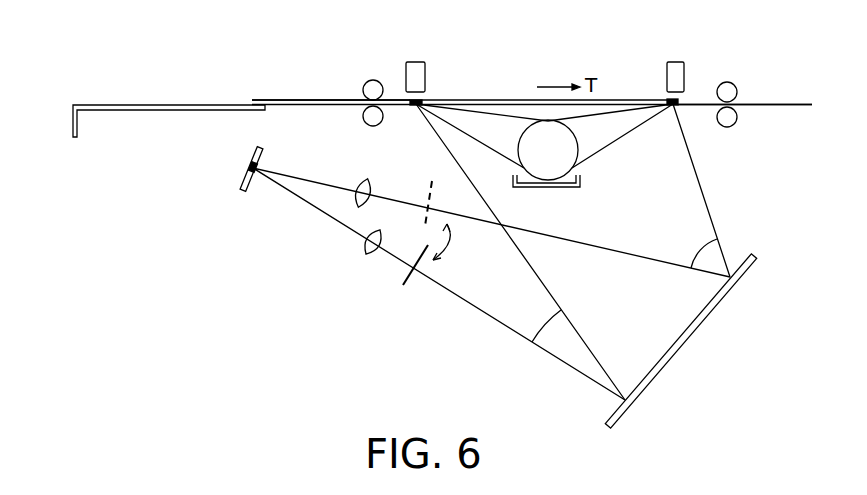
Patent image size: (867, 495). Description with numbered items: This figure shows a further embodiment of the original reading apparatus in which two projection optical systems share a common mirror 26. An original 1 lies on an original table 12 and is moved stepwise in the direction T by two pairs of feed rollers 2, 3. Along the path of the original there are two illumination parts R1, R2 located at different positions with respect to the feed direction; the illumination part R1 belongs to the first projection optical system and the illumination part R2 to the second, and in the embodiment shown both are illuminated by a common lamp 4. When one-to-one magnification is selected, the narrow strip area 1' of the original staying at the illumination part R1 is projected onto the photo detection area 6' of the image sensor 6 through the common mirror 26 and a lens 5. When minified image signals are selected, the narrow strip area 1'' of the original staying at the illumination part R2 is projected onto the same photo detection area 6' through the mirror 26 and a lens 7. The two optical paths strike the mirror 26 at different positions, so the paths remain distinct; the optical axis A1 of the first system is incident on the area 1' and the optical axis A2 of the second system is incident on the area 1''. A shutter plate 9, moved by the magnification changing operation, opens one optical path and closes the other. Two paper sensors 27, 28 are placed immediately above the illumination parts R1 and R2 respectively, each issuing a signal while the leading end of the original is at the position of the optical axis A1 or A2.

The original 1 is at (532, 84).
The narrow strip area 1' is at (745, 79).
The narrow strip area 1'' is at (353, 77).
The pair of feed rollers 2 is at (364, 82).
The pair of feed rollers 3 is at (736, 85).
The lamp 4 is at (551, 172).
The lens 5 is at (358, 182).
The image sensor 6 is at (234, 185).
The photo detection area 6' is at (468, 273).
The lens 7 is at (366, 250).
The shutter plate 9 is at (407, 286).
The original table 12 is at (155, 102).
The mirror 26 is at (703, 325).
The paper sensor 27 is at (672, 62).
The paper sensor 28 is at (407, 62).
The illumination part R1 is at (668, 111).
The illumination part R2 is at (412, 111).
The optical axis A1 is at (692, 242).
The optical axis A2 is at (531, 314).